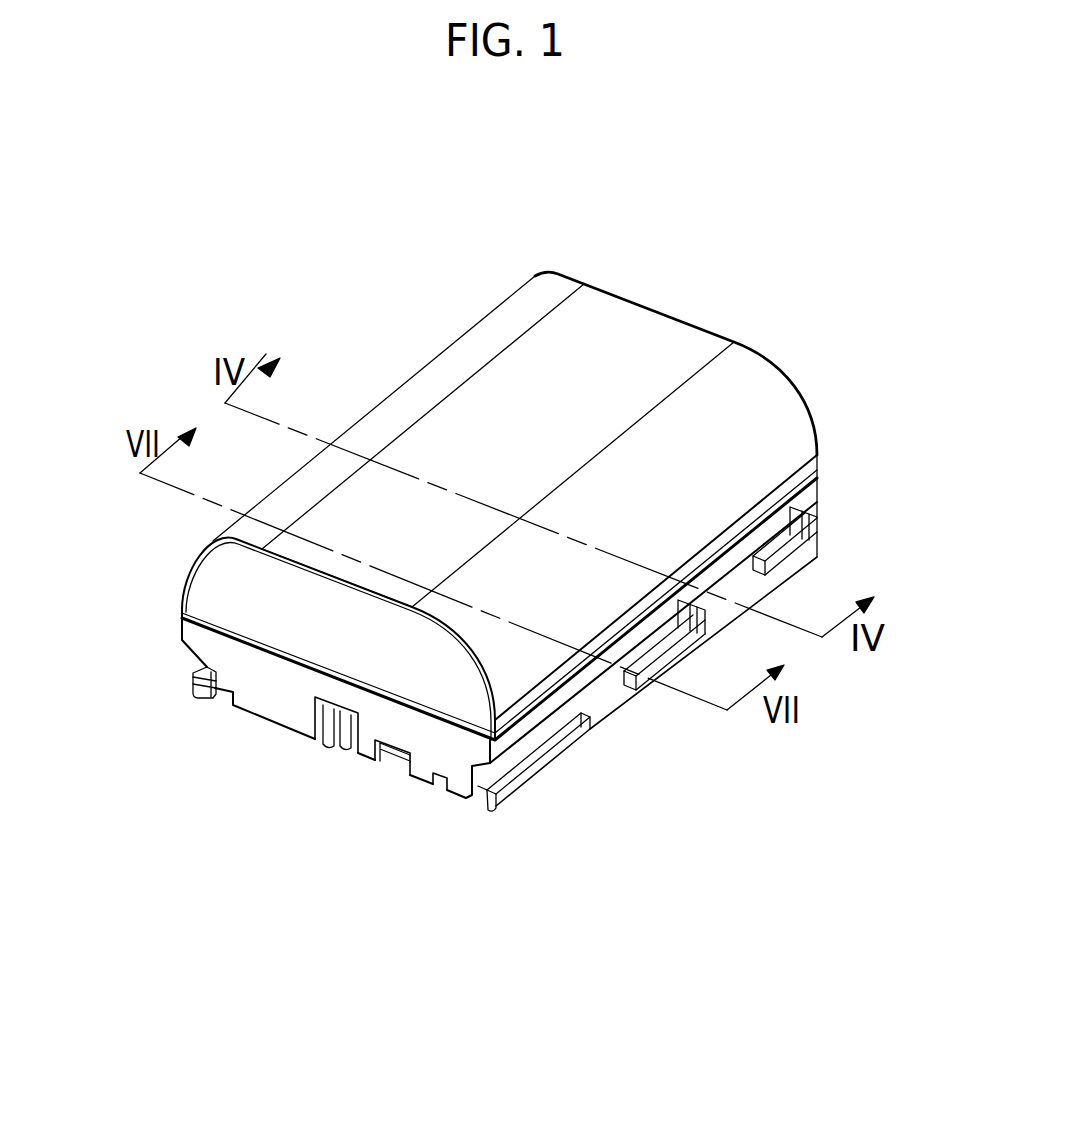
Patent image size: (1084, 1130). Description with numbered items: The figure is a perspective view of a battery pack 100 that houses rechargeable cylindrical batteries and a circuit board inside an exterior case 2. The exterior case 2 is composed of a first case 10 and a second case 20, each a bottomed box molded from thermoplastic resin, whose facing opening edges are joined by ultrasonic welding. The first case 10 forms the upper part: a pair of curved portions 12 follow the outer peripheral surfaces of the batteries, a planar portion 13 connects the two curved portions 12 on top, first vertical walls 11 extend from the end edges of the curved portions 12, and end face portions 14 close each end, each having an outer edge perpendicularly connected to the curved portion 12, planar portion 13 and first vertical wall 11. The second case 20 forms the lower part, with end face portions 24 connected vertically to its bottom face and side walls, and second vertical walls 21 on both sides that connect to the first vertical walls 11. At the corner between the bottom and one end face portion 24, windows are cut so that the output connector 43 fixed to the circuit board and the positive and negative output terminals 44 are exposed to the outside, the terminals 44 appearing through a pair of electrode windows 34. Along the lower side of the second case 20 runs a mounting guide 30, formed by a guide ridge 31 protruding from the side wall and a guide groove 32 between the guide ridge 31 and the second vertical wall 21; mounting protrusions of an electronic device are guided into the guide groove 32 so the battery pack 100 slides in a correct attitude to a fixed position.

The battery pack 100 is at (320, 218).
The exterior case 2 is at (925, 225).
The first case 10 is at (720, 313).
The second case 20 is at (840, 503).
The first vertical wall 11 is at (553, 703).
The second vertical wall 21 is at (585, 702).
The curved portion 12 is at (407, 403).
The planar portion 13 is at (510, 392).
The end face portion 14 is at (247, 592).
The end face portion 24 is at (273, 690).
The mounting guide 30 is at (735, 800).
The guide ridge 31 is at (648, 690).
The guide groove 32 is at (666, 642).
The electrode window 34 is at (430, 782).
The output connector 43 is at (326, 750).
The output terminal 44 is at (428, 772).